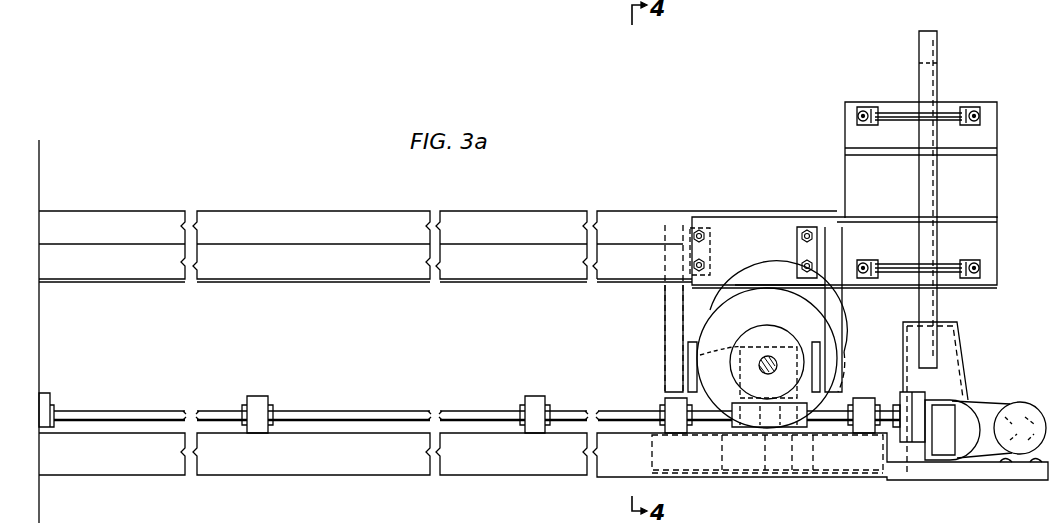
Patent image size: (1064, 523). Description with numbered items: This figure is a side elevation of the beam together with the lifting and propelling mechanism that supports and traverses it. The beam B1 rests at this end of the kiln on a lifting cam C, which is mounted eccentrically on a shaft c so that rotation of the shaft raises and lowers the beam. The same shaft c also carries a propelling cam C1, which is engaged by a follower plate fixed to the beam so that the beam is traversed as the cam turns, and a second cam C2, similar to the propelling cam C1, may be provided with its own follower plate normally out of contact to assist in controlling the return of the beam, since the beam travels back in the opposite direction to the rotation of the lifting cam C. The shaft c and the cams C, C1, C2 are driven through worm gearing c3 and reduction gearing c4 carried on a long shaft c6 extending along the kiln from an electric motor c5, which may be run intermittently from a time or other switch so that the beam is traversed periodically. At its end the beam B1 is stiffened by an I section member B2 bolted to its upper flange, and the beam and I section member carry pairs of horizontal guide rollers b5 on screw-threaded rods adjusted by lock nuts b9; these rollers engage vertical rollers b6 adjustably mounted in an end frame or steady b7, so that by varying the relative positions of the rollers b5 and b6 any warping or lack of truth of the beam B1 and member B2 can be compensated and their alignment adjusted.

The beam B1 is at (766, 262).
The I section member B2 is at (988, 137).
The horizontal guide roller b5 is at (903, 108).
The vertical roller b6 is at (927, 190).
The end frame b7 is at (957, 372).
The lock nut b9 is at (973, 110).
The lifting cam C is at (815, 328).
The propelling cam C1 is at (729, 352).
The second cam C2 is at (670, 343).
The shaft c is at (773, 355).
The worm gearing c3 is at (757, 420).
The reduction gearing c4 is at (902, 442).
The electric motor c5 is at (1023, 413).
The shaft c6 is at (338, 411).